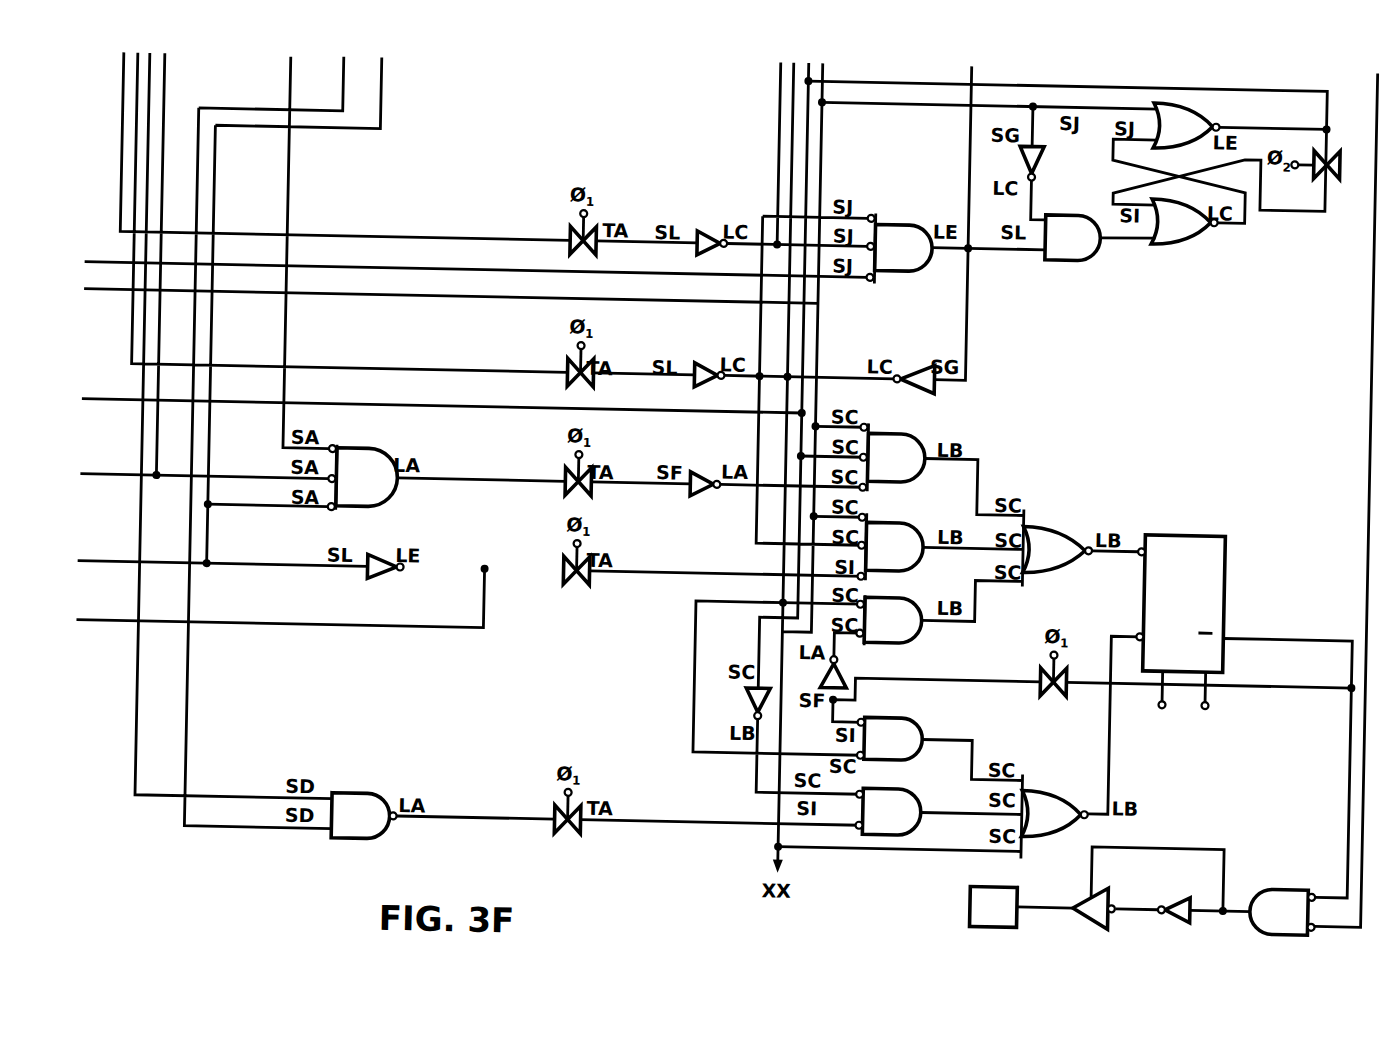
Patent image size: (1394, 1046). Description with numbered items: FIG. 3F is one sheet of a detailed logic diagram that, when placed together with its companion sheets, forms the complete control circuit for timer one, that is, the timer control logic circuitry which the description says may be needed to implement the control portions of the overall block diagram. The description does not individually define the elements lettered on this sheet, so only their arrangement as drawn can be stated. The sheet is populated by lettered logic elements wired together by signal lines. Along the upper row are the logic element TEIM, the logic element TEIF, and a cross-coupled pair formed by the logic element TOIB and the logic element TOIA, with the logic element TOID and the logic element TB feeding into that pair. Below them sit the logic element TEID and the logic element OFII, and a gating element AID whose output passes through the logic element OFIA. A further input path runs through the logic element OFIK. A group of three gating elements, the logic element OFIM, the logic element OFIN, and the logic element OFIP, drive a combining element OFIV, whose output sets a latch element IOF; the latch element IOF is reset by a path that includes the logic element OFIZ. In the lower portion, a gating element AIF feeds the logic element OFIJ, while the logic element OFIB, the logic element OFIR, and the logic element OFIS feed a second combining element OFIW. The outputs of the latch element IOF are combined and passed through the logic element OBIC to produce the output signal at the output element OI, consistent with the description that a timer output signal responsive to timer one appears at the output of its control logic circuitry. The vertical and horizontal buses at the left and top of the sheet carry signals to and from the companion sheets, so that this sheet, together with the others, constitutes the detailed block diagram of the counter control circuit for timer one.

The transmission gate TEIM is at (556, 238).
The AND gate TEIF is at (899, 240).
The transmission gate TEID is at (555, 372).
The inverter OFII is at (915, 362).
The NOR gate TOIB is at (1201, 119).
The inverter TOID is at (1056, 164).
The NOR gate TOIA is at (1204, 230).
The transmission gate TB is at (1325, 175).
The AND gate AID is at (363, 472).
The transmission gate OFIA is at (549, 481).
The transmission gate OFIK is at (548, 570).
The AND gate OFIM is at (894, 451).
The AND gate OFIN is at (892, 539).
The AND gate OFIP is at (890, 612).
The NOR gate OFIV is at (1058, 536).
The latch IOF is at (1180, 606).
The transmission gate OFIZ is at (1055, 687).
The NAND gate AIF is at (364, 802).
The transmission gate OFIJ is at (568, 824).
The inverter OFIB is at (735, 703).
The AND gate OFIR is at (891, 725).
The AND gate OFIS is at (888, 799).
The NOR gate OFIW is at (1054, 803).
The inverter OBIC is at (1136, 900).
The output OI is at (994, 906).